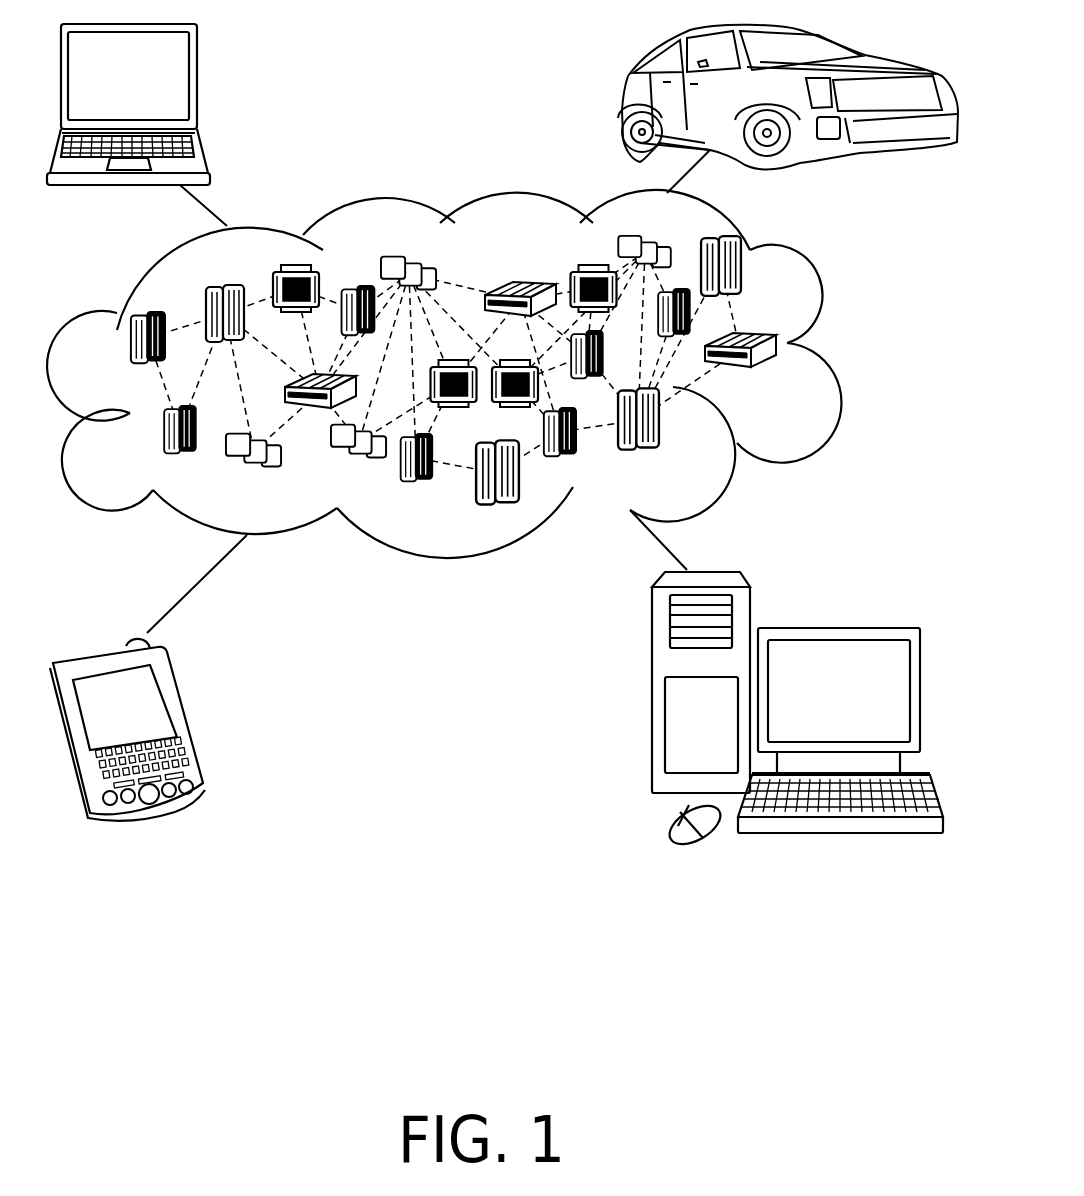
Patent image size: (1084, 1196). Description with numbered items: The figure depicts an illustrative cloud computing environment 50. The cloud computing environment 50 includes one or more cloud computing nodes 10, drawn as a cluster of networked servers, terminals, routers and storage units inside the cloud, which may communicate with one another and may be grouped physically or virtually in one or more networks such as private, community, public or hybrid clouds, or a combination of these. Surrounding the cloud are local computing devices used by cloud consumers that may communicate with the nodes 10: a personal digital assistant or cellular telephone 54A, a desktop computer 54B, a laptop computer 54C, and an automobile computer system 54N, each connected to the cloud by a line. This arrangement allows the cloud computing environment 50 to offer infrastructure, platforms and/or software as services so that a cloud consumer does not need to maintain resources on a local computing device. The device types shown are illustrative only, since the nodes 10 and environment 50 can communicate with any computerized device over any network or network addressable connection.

The cloud computing nodes 10 is at (788, 384).
The cloud computing environment 50 is at (840, 350).
The personal digital assistant (PDA) or cellular telephone 54A is at (187, 720).
The desktop computer 54B is at (836, 628).
The laptop computer 54C is at (198, 85).
The automobile computer system 54N is at (622, 102).